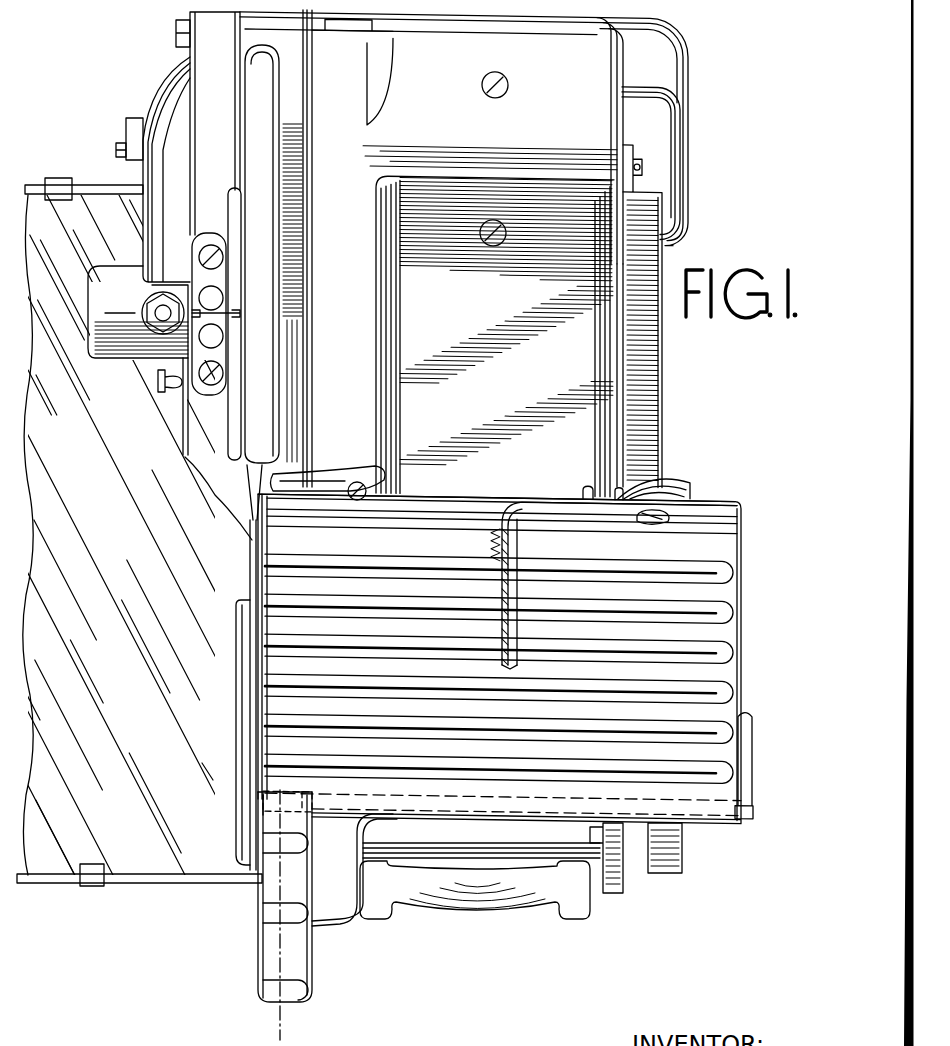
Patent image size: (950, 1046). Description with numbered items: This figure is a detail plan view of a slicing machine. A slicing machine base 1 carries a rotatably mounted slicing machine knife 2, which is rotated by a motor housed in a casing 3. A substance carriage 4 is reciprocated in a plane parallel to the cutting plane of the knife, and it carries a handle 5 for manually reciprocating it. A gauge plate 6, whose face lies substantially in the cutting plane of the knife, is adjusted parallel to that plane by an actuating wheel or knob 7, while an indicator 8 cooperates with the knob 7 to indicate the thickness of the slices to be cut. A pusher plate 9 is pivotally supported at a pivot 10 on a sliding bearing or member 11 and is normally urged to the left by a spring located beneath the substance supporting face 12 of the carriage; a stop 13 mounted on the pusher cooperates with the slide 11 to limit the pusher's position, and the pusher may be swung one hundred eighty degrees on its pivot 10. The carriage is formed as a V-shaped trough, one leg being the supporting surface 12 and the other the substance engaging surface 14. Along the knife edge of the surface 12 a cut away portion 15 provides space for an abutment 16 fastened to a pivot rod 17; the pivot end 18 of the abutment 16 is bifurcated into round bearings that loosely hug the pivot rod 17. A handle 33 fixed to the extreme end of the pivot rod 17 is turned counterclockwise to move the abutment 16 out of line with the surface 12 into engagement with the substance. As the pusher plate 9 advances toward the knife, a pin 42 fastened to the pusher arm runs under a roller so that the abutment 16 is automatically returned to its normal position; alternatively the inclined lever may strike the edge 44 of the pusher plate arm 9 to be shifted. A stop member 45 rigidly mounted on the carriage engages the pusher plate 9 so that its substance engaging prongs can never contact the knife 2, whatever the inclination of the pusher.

The slicing machine base 1 is at (677, 158).
The slicing machine knife 2 is at (244, 481).
The casing 3 is at (167, 100).
The substance carriage 4 is at (730, 547).
The handle 5 is at (482, 907).
The gauge plate 6 is at (245, 695).
The actuating wheel or knob 7 is at (680, 873).
The indicator 8 is at (615, 893).
The pusher plate 9 is at (513, 577).
The pivot 10 is at (657, 524).
The sliding bearing or member 11 is at (670, 490).
The substance supporting face 12 is at (727, 630).
The stop 13 is at (620, 492).
The substance engaging surface 14 is at (463, 503).
The cut away portion 15 is at (312, 786).
The abutment 16 is at (312, 978).
The pivot rod 17 is at (393, 819).
The pivot end 18 is at (273, 793).
The handle 33 is at (753, 740).
The pin 42 is at (587, 489).
The edge 44 is at (517, 505).
The stop member 45 is at (317, 470).